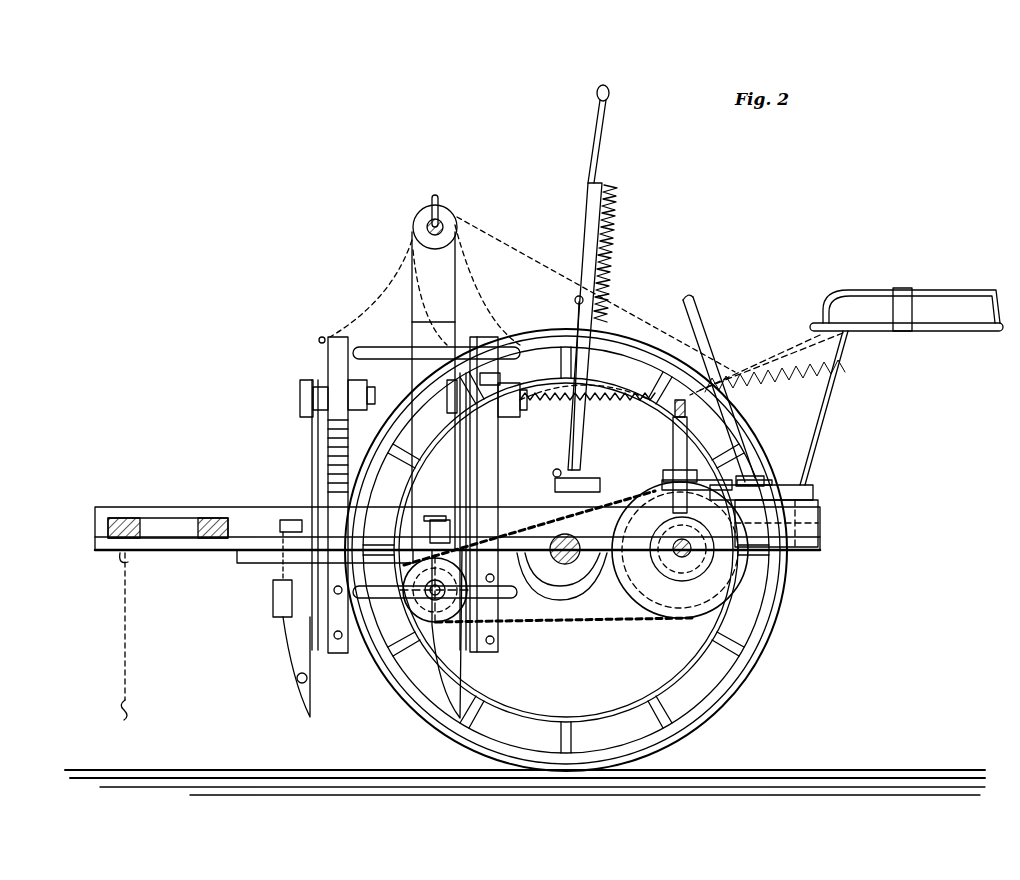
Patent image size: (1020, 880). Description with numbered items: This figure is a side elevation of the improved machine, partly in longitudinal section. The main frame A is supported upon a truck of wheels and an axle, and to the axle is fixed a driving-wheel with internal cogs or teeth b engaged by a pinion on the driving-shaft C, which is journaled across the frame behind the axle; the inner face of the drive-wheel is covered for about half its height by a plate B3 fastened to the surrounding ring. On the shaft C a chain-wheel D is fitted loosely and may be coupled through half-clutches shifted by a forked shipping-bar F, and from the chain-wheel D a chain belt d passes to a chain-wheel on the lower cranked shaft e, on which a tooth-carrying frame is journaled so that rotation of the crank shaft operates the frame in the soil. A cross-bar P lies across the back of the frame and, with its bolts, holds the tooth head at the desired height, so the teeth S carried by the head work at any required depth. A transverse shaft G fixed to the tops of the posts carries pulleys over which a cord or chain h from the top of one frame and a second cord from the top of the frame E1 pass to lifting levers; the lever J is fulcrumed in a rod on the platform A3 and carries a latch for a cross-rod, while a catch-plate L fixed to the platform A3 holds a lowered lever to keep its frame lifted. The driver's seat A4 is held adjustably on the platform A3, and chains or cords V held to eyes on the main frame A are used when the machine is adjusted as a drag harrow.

The main frame A is at (197, 502).
The platform A3 is at (812, 492).
The driver's seat A4 is at (940, 300).
The plate B3 is at (566, 550).
The driving-shaft C is at (632, 559).
The chain-wheel D is at (580, 553).
The chain belt d is at (548, 556).
The tooth-carrying frame E1 is at (480, 442).
The shipping-bar F is at (674, 472).
The shaft G is at (428, 228).
The cord or chain h is at (532, 294).
The lever J is at (579, 289).
The catch-plate L is at (732, 390).
The internal cogs or teeth b is at (587, 400).
The cross-bar P is at (329, 482).
The teeth S is at (280, 686).
The lower cranked shaft e is at (436, 464).
The chains or cords V is at (117, 639).